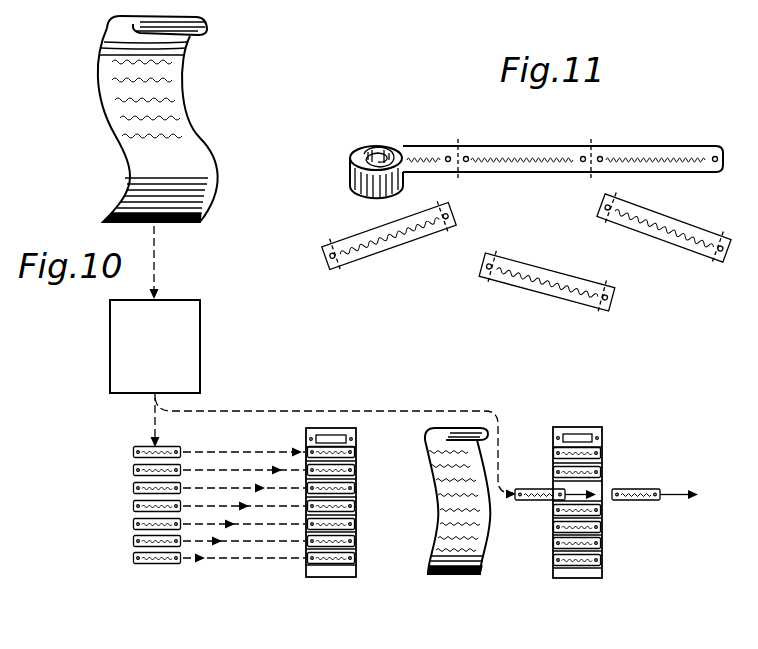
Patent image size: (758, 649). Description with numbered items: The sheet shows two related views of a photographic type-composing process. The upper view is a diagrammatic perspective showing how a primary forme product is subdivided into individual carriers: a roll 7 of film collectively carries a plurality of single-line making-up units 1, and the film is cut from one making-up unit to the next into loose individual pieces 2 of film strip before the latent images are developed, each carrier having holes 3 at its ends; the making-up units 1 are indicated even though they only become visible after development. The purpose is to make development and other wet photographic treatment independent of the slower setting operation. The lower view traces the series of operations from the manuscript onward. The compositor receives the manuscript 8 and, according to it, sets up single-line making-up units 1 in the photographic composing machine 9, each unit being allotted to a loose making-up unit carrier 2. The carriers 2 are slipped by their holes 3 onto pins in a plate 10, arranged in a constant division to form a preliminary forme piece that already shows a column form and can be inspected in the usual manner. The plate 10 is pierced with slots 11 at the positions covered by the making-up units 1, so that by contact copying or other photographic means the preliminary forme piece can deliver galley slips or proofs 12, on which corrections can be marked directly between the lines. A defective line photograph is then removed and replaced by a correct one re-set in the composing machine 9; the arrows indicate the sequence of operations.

In FIG. 10, the making-up unit 1 is at (643, 488).
In FIG. 11, the making-up unit 1 is at (569, 157).
In FIG. 10, the making-up unit carrier 2 is at (133, 556).
In FIG. 11, the making-up unit carrier 2 is at (539, 150).
In FIG. 11, the hole 3 is at (467, 155).
In FIG. 11, the roll of film 7 is at (366, 186).
In FIG. 10, the manuscript 8 is at (190, 165).
In FIG. 10, the photographic composing machine 9 is at (177, 365).
In FIG. 10, the plate 10 is at (316, 572).
In FIG. 10, the slot 11 is at (333, 437).
In FIG. 10, the galley slip or proof 12 is at (470, 573).